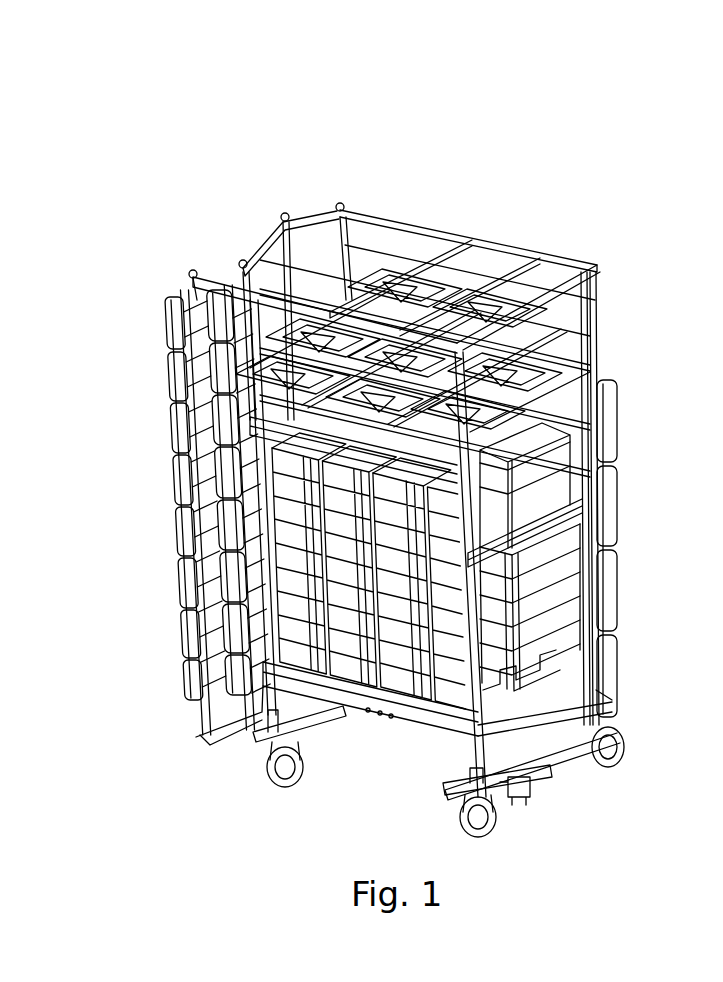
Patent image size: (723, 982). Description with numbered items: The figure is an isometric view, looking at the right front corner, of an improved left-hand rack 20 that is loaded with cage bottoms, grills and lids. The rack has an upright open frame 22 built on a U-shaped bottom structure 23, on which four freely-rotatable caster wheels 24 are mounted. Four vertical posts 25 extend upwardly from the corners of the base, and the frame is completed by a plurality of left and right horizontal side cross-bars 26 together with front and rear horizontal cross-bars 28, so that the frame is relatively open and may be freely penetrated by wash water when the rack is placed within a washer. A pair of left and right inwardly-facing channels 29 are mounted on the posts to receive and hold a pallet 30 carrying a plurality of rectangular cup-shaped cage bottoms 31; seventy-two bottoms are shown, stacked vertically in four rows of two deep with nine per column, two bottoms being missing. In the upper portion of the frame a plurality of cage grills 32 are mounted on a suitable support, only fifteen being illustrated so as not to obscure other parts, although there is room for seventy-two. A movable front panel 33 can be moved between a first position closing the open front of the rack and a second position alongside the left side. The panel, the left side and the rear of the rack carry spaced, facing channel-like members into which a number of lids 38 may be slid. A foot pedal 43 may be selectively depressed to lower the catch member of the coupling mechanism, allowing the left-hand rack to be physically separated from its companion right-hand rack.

The left-hand rack 20 is at (330, 132).
The upright open frame 22 is at (598, 270).
The U-shaped bottom structure 23 is at (317, 735).
The caster wheels 24 is at (278, 792).
The vertical posts 25 is at (365, 248).
The horizontal side cross-bars 26 is at (345, 213).
The front and rear horizontal cross-bars 28 is at (405, 243).
The inwardly-facing channels 29 is at (600, 673).
The pallet 30 is at (352, 705).
The cage bottoms 31 is at (580, 453).
The cage grills 32 is at (548, 350).
The movable front panel 33 is at (240, 250).
The lids 38 is at (175, 440).
The foot pedal 43 is at (540, 797).